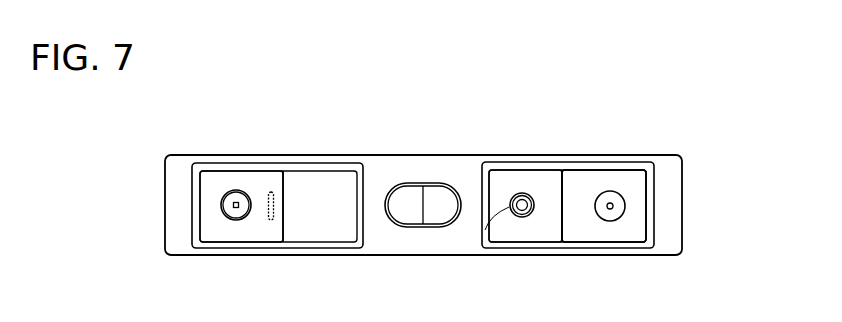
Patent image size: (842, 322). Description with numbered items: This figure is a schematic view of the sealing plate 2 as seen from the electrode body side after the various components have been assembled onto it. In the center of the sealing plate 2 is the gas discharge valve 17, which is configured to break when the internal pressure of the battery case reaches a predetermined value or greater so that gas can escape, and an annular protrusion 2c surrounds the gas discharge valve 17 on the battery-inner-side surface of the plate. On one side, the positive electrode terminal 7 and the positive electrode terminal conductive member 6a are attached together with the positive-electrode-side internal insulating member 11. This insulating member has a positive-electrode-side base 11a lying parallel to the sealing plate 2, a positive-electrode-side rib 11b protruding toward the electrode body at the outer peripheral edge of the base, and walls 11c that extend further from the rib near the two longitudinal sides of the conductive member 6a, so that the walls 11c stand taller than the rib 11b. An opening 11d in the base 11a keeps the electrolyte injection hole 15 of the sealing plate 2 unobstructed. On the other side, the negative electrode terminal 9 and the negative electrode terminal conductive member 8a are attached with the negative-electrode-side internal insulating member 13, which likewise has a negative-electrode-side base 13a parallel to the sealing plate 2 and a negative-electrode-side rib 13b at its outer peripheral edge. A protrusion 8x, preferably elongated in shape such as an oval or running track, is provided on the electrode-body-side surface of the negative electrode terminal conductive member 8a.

The sealing plate 2 is at (421, 172).
The annular protrusion 2c is at (438, 184).
The positive electrode terminal conductive member 6a is at (628, 189).
The positive electrode terminal 7 is at (617, 206).
The negative electrode terminal conductive member 8a is at (220, 178).
The protrusion 8x is at (271, 190).
The negative electrode terminal 9 is at (230, 207).
The positive-electrode-side internal insulating member 11 is at (568, 163).
The positive-electrode-side base 11a is at (541, 182).
The positive-electrode-side rib 11b is at (513, 170).
The wall 11c is at (602, 168).
The opening 11d is at (485, 230).
The negative-electrode-side internal insulating member 13 is at (242, 163).
The negative-electrode-side base 13a is at (318, 180).
The negative-electrode-side rib 13b is at (363, 165).
The electrolyte injection hole 15 is at (523, 216).
The gas discharge valve 17 is at (432, 200).